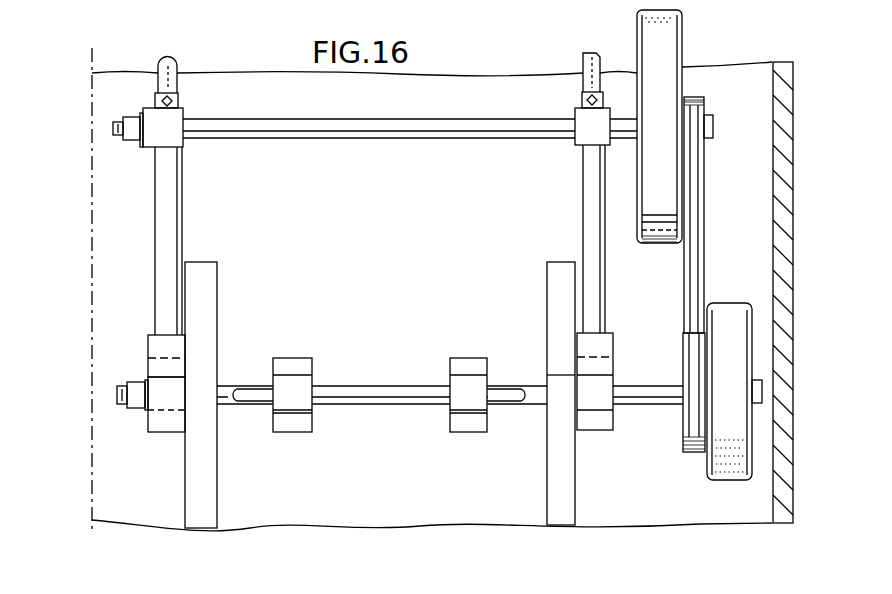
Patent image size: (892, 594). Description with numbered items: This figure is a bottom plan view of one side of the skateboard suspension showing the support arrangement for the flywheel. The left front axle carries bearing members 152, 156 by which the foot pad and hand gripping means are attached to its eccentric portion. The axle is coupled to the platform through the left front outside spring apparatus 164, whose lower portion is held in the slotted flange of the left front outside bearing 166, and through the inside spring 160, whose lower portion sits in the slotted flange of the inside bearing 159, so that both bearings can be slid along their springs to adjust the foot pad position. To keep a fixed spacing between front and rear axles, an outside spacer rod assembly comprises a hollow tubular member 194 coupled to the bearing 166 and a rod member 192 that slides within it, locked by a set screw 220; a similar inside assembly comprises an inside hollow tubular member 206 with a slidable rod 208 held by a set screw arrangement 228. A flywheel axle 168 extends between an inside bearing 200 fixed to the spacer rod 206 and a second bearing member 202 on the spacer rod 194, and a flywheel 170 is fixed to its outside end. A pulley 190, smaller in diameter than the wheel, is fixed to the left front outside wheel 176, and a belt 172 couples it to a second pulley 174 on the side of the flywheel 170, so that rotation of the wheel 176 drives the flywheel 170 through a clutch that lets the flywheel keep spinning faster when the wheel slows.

The bearing member 152 is at (280, 357).
The bearing member 156 is at (460, 357).
The bearing 159 is at (158, 433).
The spring 160 is at (217, 296).
The left front outside spring apparatus 164 is at (552, 273).
The left front outside bearing 166 is at (593, 435).
The flywheel axle 168 is at (388, 138).
The flywheel 170 is at (645, 245).
The belt 172 is at (698, 257).
The second pulley 174 is at (706, 155).
The left front outside wheel 176 is at (727, 480).
The pulley 190 is at (690, 455).
The rod member 192 is at (583, 65).
The hollow tubular member 194 is at (583, 200).
The inside bearing 200 is at (173, 138).
The second bearing member 202 is at (582, 140).
The inside hollow tubular member 206 is at (182, 212).
The rod 208 is at (177, 70).
The set screw 220 is at (582, 100).
The set screw arrangement 228 is at (178, 103).